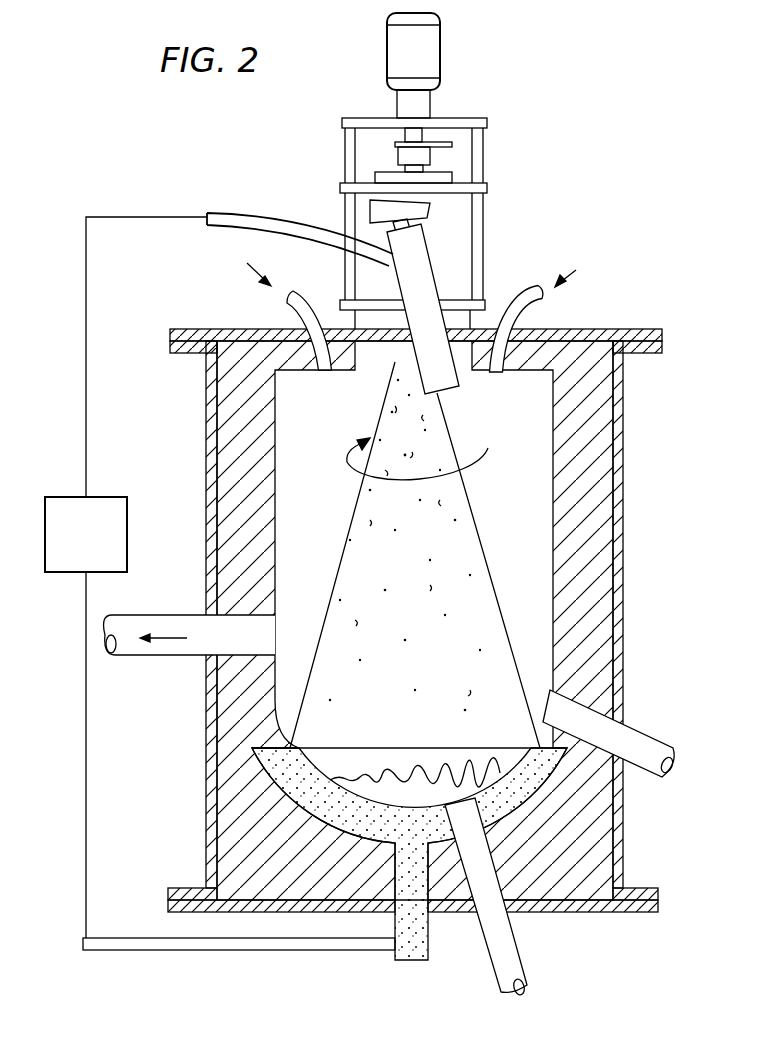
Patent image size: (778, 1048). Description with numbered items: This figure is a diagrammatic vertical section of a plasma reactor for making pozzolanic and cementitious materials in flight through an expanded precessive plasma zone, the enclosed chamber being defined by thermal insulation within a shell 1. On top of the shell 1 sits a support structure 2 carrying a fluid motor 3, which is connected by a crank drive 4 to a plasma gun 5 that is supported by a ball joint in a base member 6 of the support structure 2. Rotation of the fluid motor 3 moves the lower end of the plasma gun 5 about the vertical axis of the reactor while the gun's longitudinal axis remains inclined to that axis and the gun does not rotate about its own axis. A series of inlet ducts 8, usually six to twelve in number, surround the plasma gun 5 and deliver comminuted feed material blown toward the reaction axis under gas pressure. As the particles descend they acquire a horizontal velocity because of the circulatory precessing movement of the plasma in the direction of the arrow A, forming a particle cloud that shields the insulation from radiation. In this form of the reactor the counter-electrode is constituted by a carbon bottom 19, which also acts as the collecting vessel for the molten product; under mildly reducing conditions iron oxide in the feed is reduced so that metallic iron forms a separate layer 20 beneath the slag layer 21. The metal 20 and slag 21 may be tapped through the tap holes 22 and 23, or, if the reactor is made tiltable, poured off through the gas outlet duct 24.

The shell 1 is at (625, 405).
The support structure 2 is at (484, 212).
The fluid motor 3 is at (430, 55).
The crank drive 4 is at (420, 203).
The plasma gun 5 is at (420, 277).
The base member 6 is at (393, 313).
The inlet ducts 8 is at (284, 302).
The carbon bottom 19 is at (517, 797).
The metal layer 20 is at (410, 790).
The slag layer 21 is at (347, 760).
The tap hole 22 is at (510, 958).
The tap hole 23 is at (630, 743).
The gas outlet duct 24 is at (240, 630).
The direction of precessing movement A is at (422, 456).